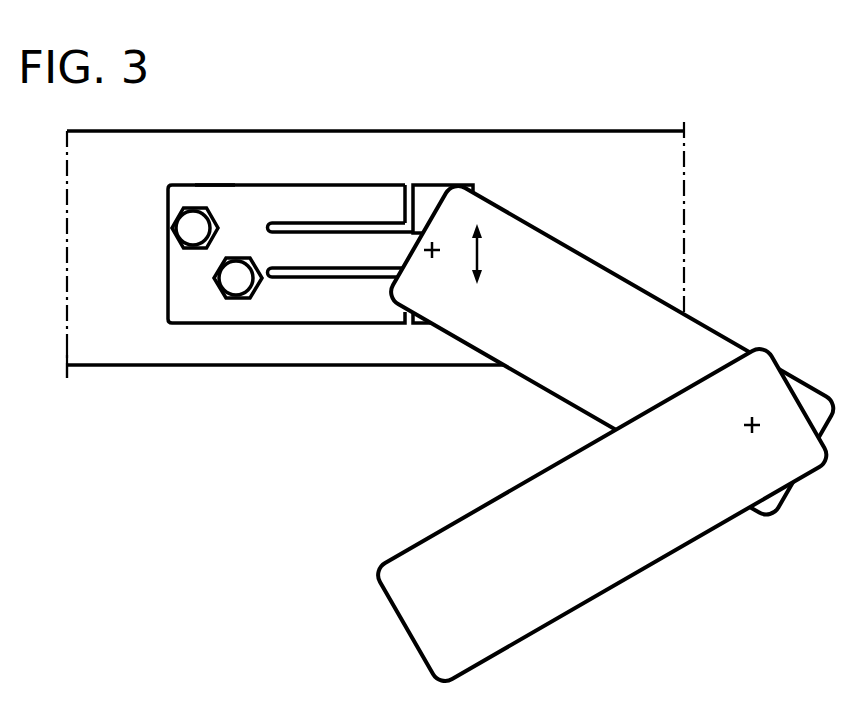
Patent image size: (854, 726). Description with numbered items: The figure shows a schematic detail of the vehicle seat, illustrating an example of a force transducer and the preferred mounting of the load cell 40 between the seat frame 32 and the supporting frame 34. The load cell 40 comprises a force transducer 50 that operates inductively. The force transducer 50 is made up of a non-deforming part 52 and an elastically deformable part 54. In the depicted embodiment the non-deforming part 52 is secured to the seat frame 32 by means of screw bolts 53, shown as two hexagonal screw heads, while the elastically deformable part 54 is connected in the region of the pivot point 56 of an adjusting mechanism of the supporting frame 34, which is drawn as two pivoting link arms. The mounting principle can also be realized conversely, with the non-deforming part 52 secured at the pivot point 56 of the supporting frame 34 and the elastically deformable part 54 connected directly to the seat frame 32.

The seat frame 32 is at (617, 155).
The supporting frame 34 is at (706, 557).
The load cell 40 is at (298, 178).
The force transducer 50 is at (318, 292).
The non-deforming part 52 is at (214, 176).
The fastening screws 53 is at (203, 228).
The elastically deformable part 54 is at (431, 176).
The pivot point 56 is at (440, 254).